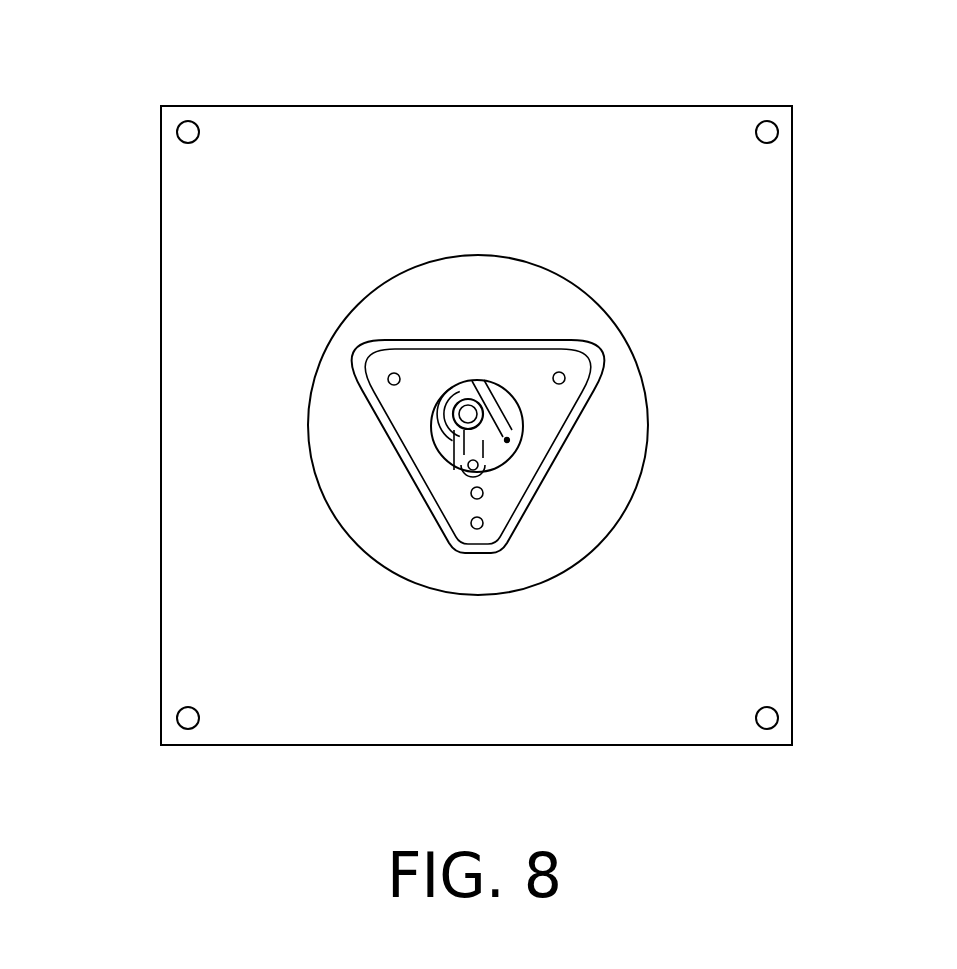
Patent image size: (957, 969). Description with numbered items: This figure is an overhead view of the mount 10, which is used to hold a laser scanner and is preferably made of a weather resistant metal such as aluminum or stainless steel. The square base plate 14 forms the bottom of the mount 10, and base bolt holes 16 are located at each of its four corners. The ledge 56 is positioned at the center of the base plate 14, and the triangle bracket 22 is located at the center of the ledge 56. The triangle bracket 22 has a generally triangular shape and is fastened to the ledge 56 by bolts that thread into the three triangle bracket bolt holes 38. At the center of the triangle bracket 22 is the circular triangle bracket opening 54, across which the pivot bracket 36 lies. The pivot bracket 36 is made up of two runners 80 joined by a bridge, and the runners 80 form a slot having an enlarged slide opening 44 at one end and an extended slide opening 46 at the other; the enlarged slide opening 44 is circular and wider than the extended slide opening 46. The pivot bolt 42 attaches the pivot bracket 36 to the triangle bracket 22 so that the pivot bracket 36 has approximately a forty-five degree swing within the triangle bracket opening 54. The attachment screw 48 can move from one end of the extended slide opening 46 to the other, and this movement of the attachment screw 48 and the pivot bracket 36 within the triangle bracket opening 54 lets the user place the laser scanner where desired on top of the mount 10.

The mount 10 is at (118, 182).
The base plate 14 is at (244, 443).
The base bolt holes 16 is at (196, 124).
The triangle bracket 22 is at (448, 502).
The pivot bracket 36 is at (430, 458).
The triangle bracket bolt holes 38 is at (566, 374).
The pivot bolt 42 is at (477, 360).
The enlarged slide opening 44 is at (478, 470).
The extended slide opening 46 is at (478, 447).
The attachment screw 48 is at (505, 423).
The triangle bracket opening 54 is at (507, 440).
The ledge 56 is at (428, 290).
The runners 80 is at (488, 383).